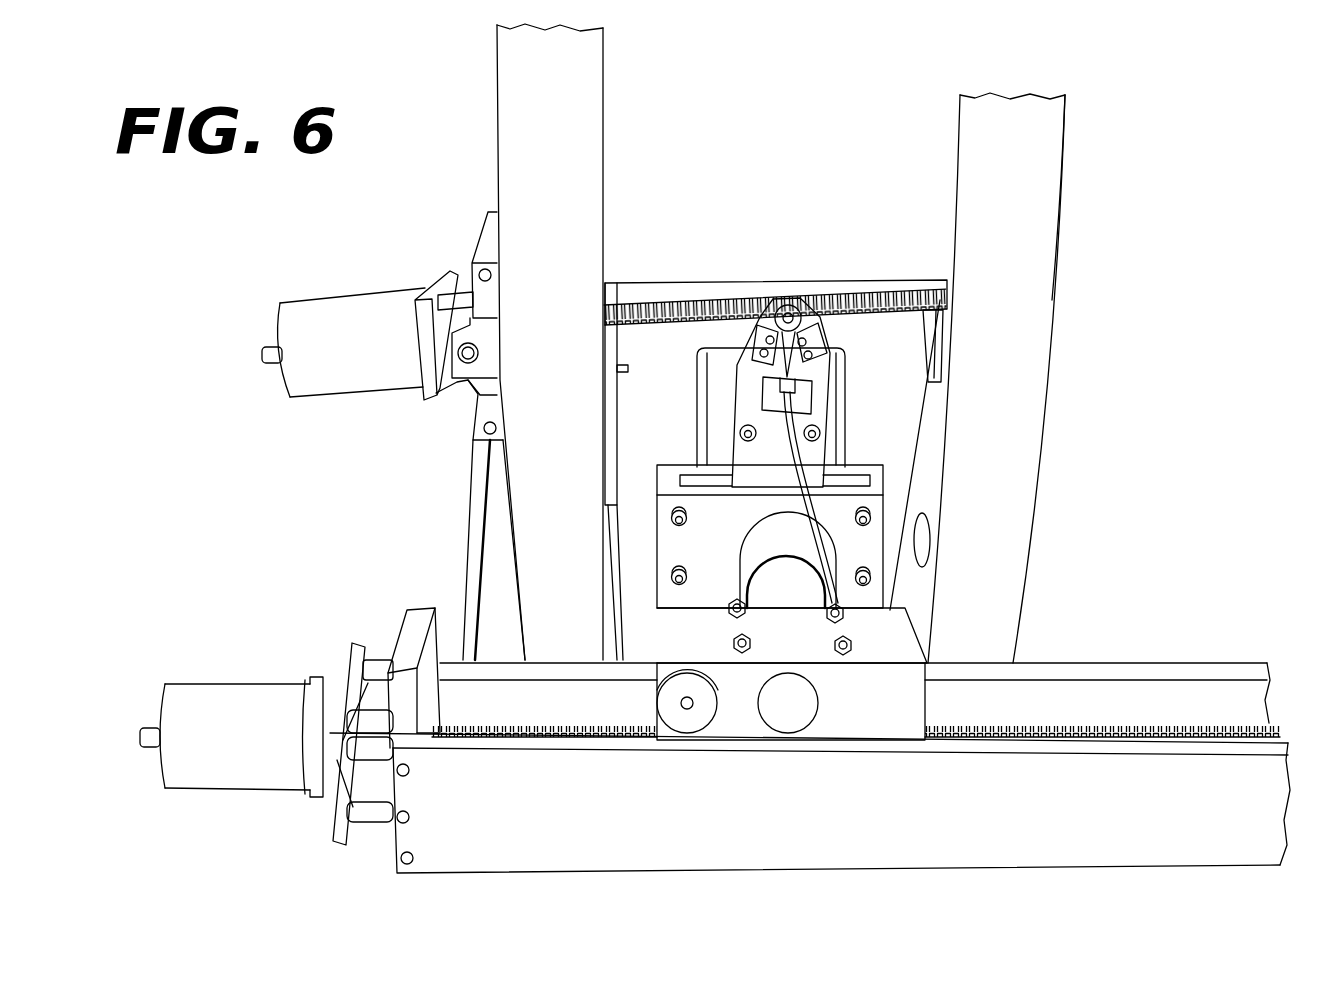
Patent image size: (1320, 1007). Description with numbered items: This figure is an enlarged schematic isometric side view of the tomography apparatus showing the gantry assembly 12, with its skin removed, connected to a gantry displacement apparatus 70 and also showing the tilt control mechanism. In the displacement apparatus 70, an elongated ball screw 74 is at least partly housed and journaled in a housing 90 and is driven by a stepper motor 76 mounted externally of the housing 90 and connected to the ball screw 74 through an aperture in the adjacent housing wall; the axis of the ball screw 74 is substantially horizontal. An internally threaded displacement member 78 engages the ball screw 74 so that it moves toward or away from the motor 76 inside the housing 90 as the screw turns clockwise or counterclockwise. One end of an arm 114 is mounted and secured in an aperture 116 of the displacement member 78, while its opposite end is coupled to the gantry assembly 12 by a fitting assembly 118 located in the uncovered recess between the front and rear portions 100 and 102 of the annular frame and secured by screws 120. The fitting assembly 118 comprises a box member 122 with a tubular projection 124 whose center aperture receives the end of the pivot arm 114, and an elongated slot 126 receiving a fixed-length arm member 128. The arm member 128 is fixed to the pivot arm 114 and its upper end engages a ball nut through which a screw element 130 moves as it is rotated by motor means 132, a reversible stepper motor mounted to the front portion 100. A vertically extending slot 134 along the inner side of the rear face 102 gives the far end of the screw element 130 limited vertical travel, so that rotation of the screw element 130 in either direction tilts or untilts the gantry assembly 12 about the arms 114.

The gantry assembly 12 is at (1065, 152).
The gantry displacement apparatus 70 is at (1132, 642).
The ball screw 74 is at (1000, 727).
The stepper motor 76 is at (240, 690).
The displacement member 78 is at (913, 628).
The housing 90 is at (1200, 663).
The front portion of the annular frame 100 is at (563, 141).
The rear portion of the annular frame 102 is at (1025, 195).
The arm 114 is at (862, 562).
The aperture 116 is at (820, 700).
The fitting assembly 118 is at (857, 452).
The screws 120 is at (880, 505).
The box member 122 is at (882, 490).
The tubular projection 124 is at (858, 540).
The elongated slot 126 is at (877, 478).
The fixed-length arm member 128 is at (833, 397).
The screw element 130 is at (725, 300).
The motor means 132 is at (357, 305).
The vertically extending slot 134 is at (940, 320).